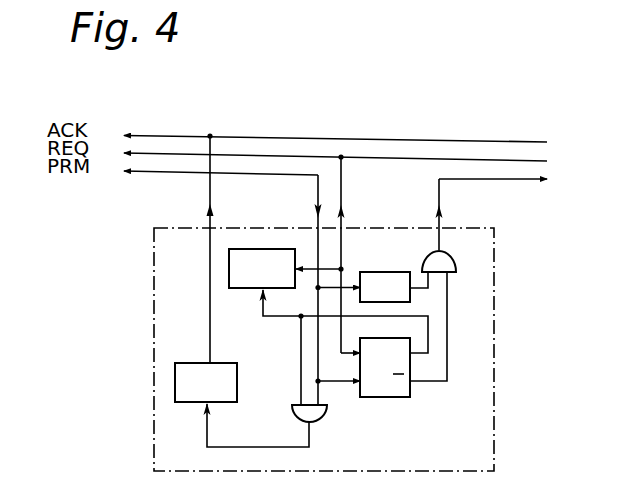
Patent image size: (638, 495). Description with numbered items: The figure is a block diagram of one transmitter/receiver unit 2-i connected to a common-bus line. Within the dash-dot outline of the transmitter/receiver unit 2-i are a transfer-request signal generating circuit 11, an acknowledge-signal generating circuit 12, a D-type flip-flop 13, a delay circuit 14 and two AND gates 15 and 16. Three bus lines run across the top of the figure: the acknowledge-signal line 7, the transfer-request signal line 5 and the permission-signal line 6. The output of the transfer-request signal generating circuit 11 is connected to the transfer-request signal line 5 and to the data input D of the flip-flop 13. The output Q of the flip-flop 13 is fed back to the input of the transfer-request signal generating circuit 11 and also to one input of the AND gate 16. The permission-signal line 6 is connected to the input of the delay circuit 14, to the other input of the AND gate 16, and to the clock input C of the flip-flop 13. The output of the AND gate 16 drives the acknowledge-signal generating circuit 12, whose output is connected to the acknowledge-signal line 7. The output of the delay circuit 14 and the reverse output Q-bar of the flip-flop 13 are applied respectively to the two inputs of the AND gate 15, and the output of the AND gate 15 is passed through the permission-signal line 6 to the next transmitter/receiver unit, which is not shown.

The transfer-request signal line 5 is at (188, 152).
The permission-signal line 6 is at (170, 173).
The acknowledge-signal line 7 is at (173, 135).
The transfer-request signal generating circuit 11 is at (247, 290).
The acknowledge-signal generating circuit 12 is at (236, 363).
The D-type flip-flop 13 is at (392, 398).
The delay circuit 14 is at (389, 272).
The AND gate 15 is at (456, 265).
The AND gate 16 is at (324, 417).
The transmitter/receiver unit 2-i is at (494, 455).